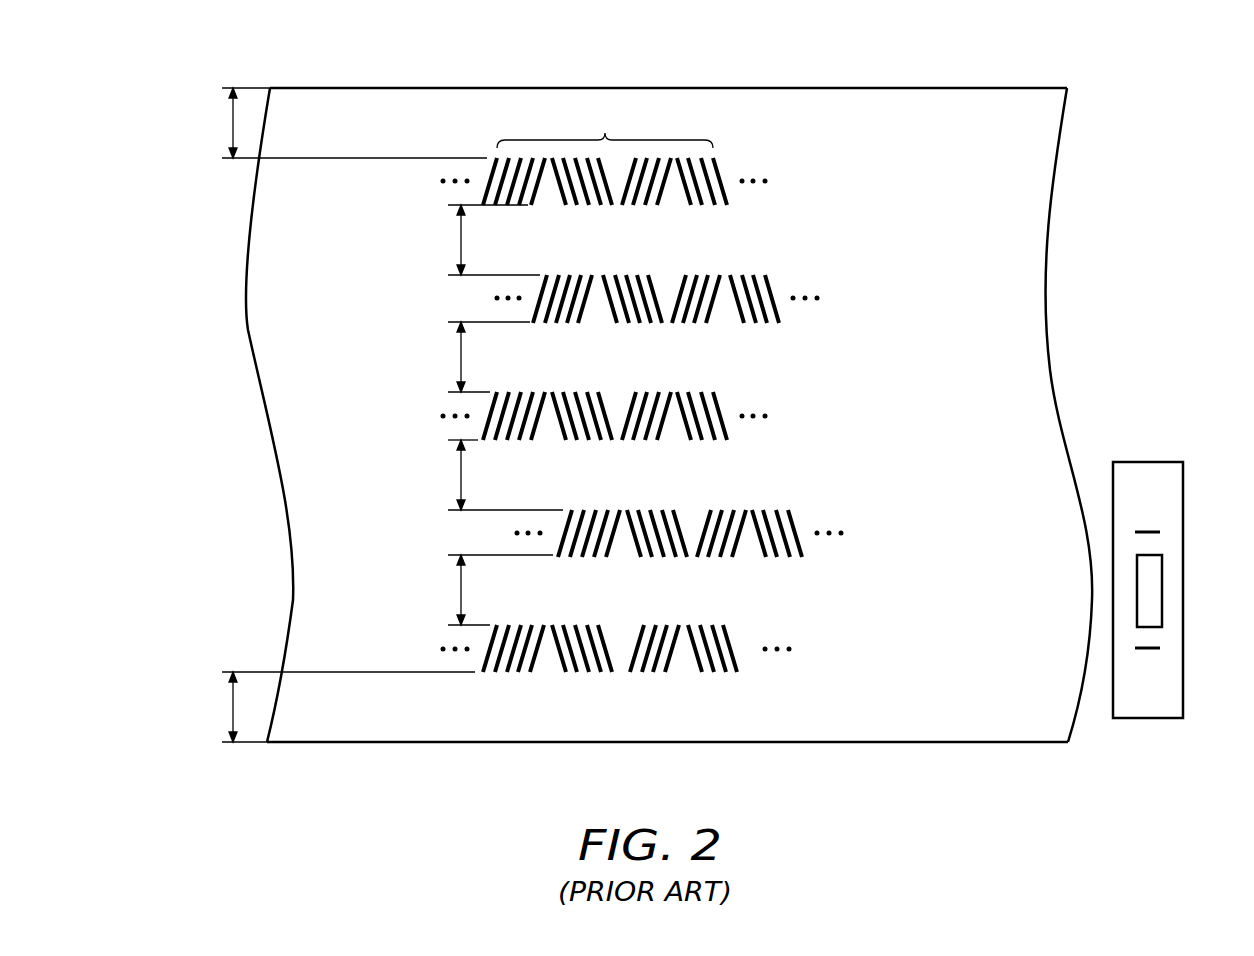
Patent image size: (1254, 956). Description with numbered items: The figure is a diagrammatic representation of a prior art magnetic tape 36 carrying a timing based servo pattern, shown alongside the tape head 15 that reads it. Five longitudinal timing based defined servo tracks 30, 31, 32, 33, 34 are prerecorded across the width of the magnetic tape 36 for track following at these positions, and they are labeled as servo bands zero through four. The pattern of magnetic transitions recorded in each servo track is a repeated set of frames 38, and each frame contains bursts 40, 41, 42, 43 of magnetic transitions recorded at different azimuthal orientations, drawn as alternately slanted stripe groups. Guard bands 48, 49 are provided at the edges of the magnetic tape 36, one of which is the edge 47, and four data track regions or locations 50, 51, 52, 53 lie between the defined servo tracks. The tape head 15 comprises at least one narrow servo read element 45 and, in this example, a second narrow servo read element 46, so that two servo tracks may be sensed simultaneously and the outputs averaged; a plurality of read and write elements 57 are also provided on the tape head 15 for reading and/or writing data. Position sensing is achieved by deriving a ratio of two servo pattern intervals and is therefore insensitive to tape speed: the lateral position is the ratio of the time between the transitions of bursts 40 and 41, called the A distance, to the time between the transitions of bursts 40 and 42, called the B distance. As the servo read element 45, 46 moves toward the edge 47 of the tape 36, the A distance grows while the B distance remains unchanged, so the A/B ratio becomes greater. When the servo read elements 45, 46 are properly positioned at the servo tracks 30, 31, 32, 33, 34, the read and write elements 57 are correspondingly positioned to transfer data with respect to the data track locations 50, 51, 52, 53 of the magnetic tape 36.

The tape head 15 is at (1174, 558).
The servo track 30 is at (756, 156).
The servo track 31 is at (797, 267).
The servo track 32 is at (746, 385).
The servo track 33 is at (817, 502).
The servo track 34 is at (733, 652).
The magnetic tape 36 is at (655, 87).
The frame 38 is at (605, 125).
The burst 40 is at (483, 684).
The burst 41 is at (563, 684).
The burst 42 is at (667, 684).
The burst 43 is at (735, 684).
The servo read element 45 is at (1147, 648).
The second servo read element 46 is at (1148, 532).
The edge 47 is at (655, 745).
The guard band 48 is at (233, 124).
The guard band 49 is at (233, 705).
The data track location 50 is at (459, 242).
The data track location 51 is at (459, 358).
The data track location 52 is at (459, 475).
The data track location 53 is at (459, 592).
The read and write elements 57 is at (1162, 590).